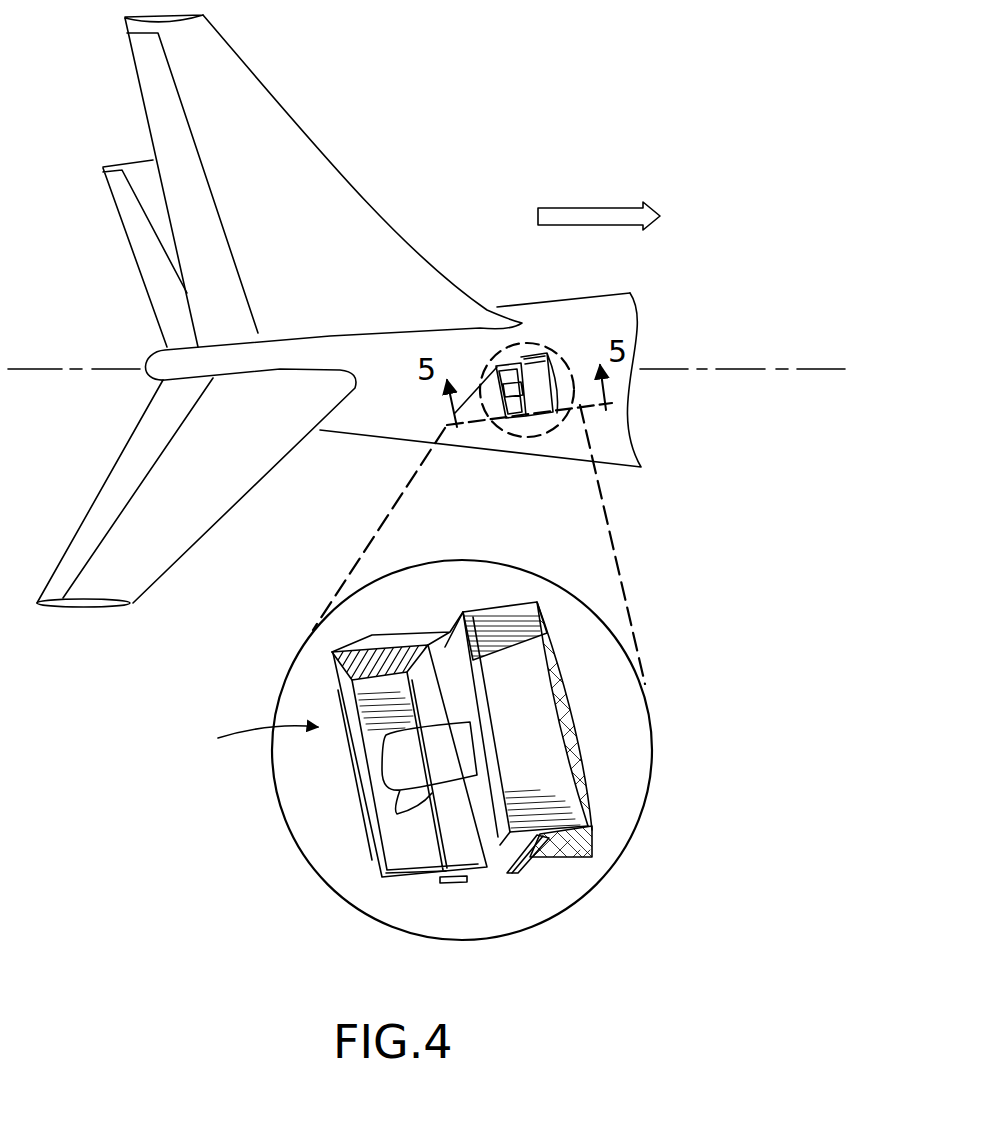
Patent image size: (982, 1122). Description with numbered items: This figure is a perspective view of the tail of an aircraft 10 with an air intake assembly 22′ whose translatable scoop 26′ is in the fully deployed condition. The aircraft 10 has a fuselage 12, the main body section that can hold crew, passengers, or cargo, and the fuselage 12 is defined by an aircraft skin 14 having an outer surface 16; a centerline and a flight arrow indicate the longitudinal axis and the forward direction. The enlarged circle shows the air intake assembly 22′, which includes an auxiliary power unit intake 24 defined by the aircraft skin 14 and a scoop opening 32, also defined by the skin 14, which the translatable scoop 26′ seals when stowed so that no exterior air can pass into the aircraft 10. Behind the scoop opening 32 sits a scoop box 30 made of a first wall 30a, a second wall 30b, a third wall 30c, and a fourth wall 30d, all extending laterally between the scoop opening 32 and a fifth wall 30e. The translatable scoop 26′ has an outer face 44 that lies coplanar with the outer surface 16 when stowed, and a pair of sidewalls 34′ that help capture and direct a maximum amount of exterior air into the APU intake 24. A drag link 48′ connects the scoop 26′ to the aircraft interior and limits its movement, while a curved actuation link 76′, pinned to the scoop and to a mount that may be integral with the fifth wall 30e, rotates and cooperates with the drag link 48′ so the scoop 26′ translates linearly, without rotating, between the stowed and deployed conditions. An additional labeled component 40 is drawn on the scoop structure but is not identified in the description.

The aircraft 10 is at (497, 158).
The fuselage 12 is at (587, 296).
The aircraft skin 14 is at (628, 313).
The outer surface 16 is at (600, 658).
The air intake assembly 22′ is at (537, 884).
The auxiliary power unit (APU) intake 24 is at (583, 842).
The translatable scoop 26′ is at (502, 628).
The scoop box 30 is at (338, 690).
The first wall 30a is at (467, 845).
The second wall 30b is at (394, 859).
The third wall 30c is at (420, 860).
The fourth wall 30d is at (370, 665).
The fifth wall 30e is at (373, 703).
The scoop opening 32 is at (251, 737).
The sidewall 34′ is at (508, 852).
The housing side wall 40 is at (495, 800).
The outer face 44 is at (530, 657).
The drag link 48′ is at (532, 852).
The actuation link 76′ is at (420, 750).